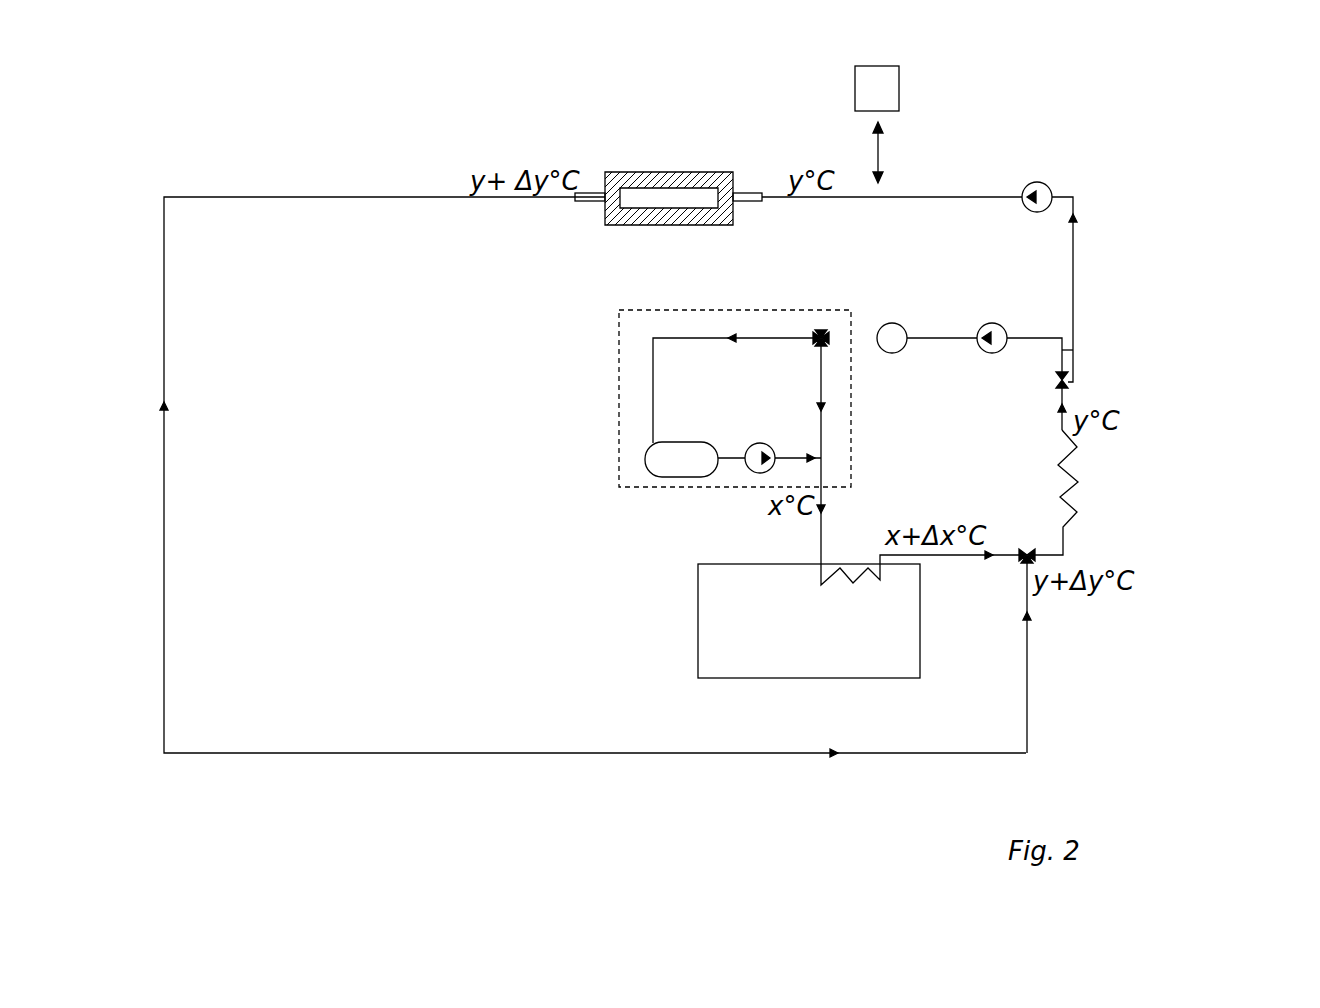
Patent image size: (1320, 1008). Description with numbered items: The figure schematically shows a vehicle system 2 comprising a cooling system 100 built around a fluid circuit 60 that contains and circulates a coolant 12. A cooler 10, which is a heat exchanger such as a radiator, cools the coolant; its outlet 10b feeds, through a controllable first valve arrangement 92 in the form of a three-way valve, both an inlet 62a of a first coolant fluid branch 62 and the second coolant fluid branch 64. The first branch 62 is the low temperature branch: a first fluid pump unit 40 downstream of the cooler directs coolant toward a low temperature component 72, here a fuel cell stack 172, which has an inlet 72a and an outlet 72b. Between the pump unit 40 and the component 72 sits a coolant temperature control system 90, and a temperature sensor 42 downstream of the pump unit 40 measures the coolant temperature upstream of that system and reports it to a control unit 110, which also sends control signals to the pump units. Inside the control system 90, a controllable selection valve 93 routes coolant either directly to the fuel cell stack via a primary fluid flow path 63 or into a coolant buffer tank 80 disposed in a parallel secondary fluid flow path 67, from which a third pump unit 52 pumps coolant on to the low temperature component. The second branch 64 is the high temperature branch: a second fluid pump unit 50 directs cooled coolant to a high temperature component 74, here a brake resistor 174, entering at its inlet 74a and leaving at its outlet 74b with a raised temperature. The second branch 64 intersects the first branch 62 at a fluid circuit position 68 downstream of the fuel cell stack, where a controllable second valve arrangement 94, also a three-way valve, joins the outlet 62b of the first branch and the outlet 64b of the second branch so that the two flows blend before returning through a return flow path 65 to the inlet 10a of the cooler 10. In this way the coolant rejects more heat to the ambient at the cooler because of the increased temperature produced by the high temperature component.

The system 2 is at (352, 115).
The cooling system 100 is at (243, 160).
The fluid circuit 60 is at (710, 434).
The second coolant fluid branch 64 is at (412, 197).
The outlet of the second coolant fluid branch 64b is at (1030, 605).
The high temperature component 74 is at (678, 156).
The brake resistor 174 is at (672, 172).
The inlet of the high temperature component 74a is at (750, 193).
The outlet of the high temperature component 74b is at (592, 193).
The control unit 110 is at (899, 92).
The second fluid pump unit 50 is at (1040, 182).
The first fluid pump unit 40 is at (1045, 338).
The temperature sensor 42 is at (897, 323).
The first coolant fluid branch 62 is at (820, 542).
The inlet of the first coolant fluid branch 62a is at (1064, 346).
The outlet of the first coolant fluid branch 62b is at (1018, 558).
The coolant 12 is at (1074, 351).
The primary fluid flow path 63 is at (824, 432).
The first valve arrangement 92 is at (1070, 384).
The controllable selection valve 93 is at (824, 328).
The fluid circuit position 68 is at (1027, 548).
The return flow path 65 is at (1066, 540).
The cooler 10 is at (1095, 474).
The inlet of the cooler 10a is at (1112, 487).
The outlet of the cooler 10b is at (1062, 432).
The second valve arrangement 94 is at (1062, 525).
The coolant temperature control system 90 is at (780, 310).
The secondary fluid flow path 67 is at (653, 393).
The coolant buffer tank 80 is at (648, 458).
The third pump unit 52 is at (758, 443).
The low temperature component 72 is at (741, 584).
The fuel cell stack 172 is at (698, 622).
The inlet of the low temperature component 72a is at (820, 562).
The outlet of the low temperature component 72b is at (880, 564).